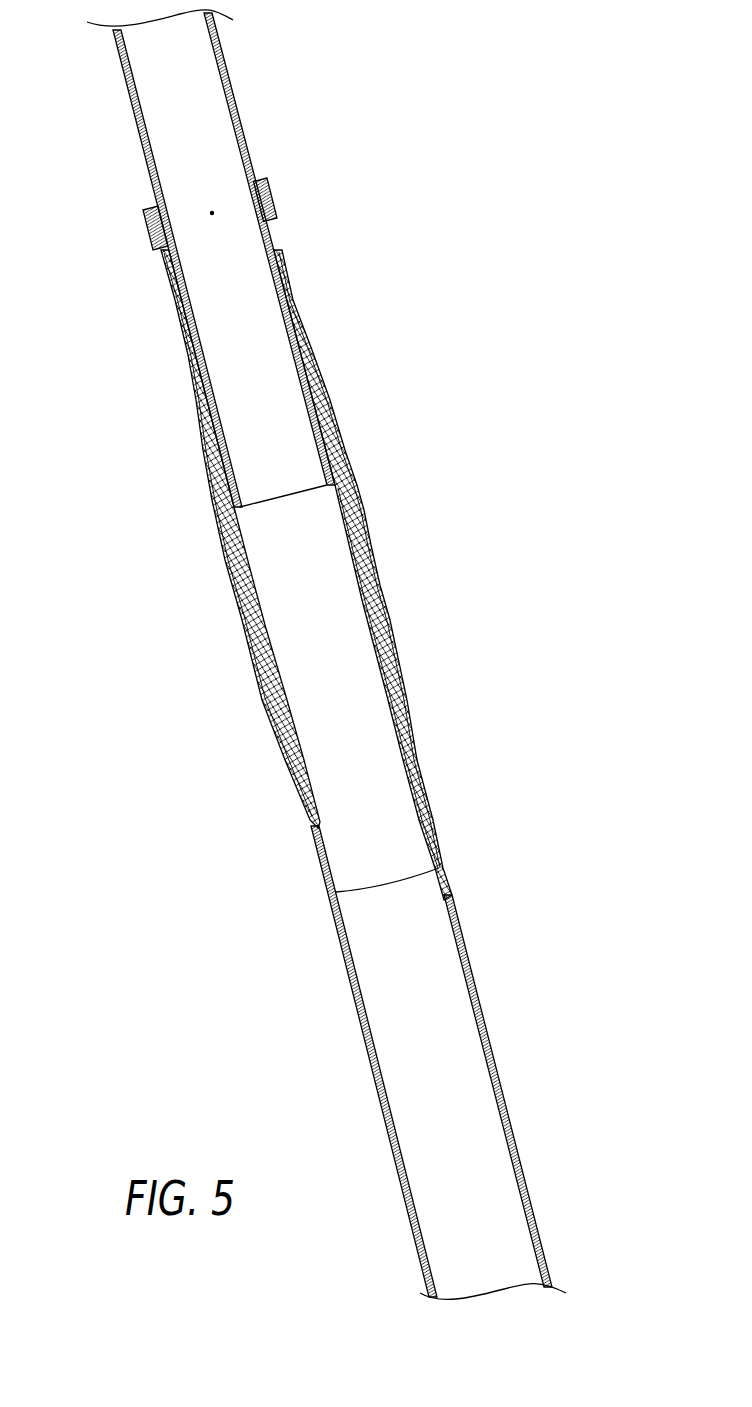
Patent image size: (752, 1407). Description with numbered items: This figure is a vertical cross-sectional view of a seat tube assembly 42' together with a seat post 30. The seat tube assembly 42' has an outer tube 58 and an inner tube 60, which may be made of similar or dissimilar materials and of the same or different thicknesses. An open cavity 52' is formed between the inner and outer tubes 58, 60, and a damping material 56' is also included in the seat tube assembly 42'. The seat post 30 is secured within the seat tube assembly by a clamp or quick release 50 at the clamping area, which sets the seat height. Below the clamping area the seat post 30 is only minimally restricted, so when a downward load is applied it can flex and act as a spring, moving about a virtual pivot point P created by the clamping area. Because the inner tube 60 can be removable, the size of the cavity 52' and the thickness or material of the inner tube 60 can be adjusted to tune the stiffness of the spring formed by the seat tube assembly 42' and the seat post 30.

The seat post 30 is at (203, 94).
The clamp or quick release 50 is at (147, 225).
The outer tube 58 is at (280, 233).
The open cavity 52' is at (379, 575).
The damping material 56' is at (411, 678).
The inner tube 60 is at (270, 547).
The seat tube assembly 42' is at (480, 927).
The virtual pivot point P is at (212, 217).